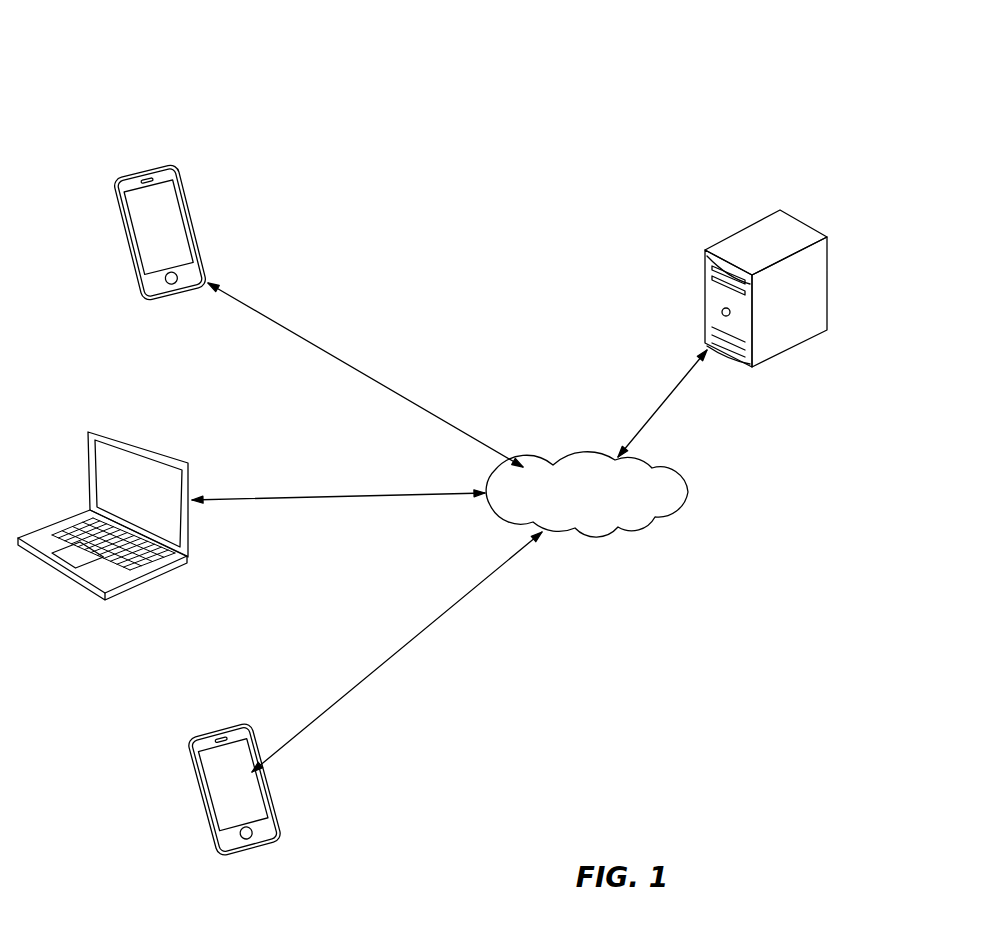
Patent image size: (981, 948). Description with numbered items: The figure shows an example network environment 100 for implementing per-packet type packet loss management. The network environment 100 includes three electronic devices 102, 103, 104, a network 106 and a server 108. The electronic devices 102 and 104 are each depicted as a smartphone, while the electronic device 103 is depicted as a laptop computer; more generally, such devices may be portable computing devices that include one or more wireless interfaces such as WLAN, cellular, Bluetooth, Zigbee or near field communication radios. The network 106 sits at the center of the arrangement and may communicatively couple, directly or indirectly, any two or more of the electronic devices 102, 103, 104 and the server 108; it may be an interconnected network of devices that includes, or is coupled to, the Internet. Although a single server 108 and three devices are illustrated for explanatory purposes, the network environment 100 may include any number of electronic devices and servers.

The network environment 100 is at (181, 86).
The electronic device 102 is at (227, 850).
The electronic device 103 is at (105, 598).
The electronic device 104 is at (172, 302).
The network 106 is at (617, 535).
The server 108 is at (713, 243).